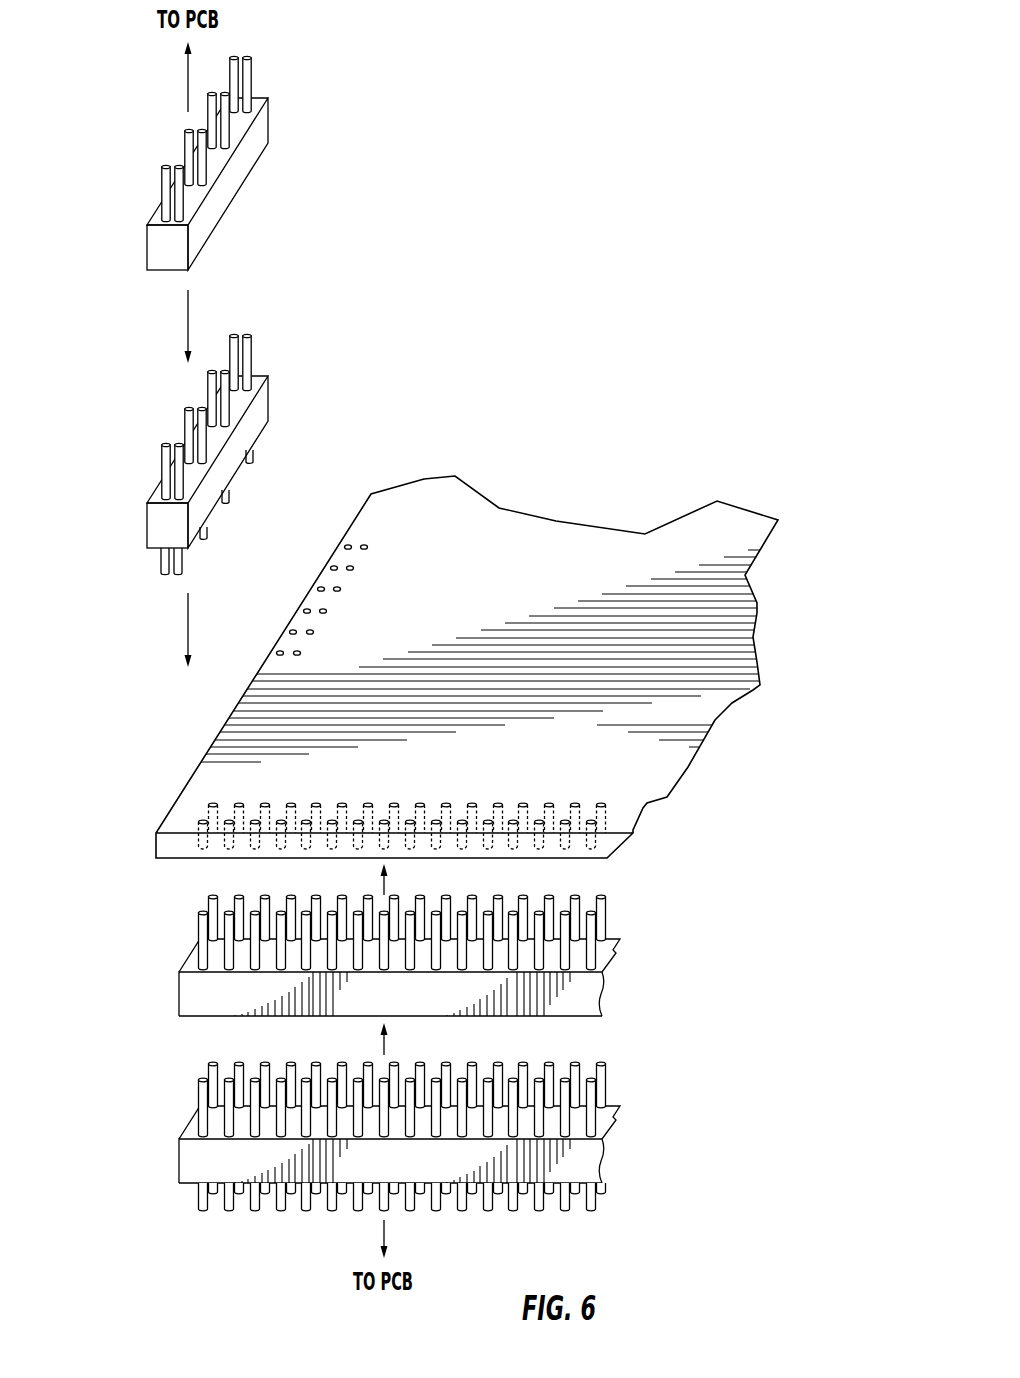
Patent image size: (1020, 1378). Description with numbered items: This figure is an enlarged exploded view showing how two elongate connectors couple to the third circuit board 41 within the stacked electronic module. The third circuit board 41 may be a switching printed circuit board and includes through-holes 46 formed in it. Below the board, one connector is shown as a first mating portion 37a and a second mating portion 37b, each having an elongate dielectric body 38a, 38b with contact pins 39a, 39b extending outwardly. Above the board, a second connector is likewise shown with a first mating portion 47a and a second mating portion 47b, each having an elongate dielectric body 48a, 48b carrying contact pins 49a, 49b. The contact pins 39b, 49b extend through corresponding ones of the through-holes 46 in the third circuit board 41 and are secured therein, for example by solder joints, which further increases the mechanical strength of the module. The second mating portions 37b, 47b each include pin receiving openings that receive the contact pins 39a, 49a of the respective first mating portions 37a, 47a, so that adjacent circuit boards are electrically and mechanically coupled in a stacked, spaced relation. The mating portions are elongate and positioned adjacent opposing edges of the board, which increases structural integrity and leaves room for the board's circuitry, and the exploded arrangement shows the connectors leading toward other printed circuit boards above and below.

The first mating portion 37a is at (398, 1129).
The second mating portion 37b is at (398, 955).
The elongate dielectric body 38a is at (590, 1160).
The elongate dielectric body 38b is at (590, 993).
The contact pins 39a is at (600, 1083).
The contact pins 39b is at (600, 915).
The third circuit board 41 is at (658, 759).
The through-holes 46 is at (332, 562).
The first mating portion 47a is at (181, 456).
The second mating portion 47b is at (181, 163).
The elongate dielectric body 48a is at (257, 410).
The elongate dielectric body 48b is at (257, 130).
The contact pins 49a is at (158, 563).
The contact pins 49b is at (158, 173).